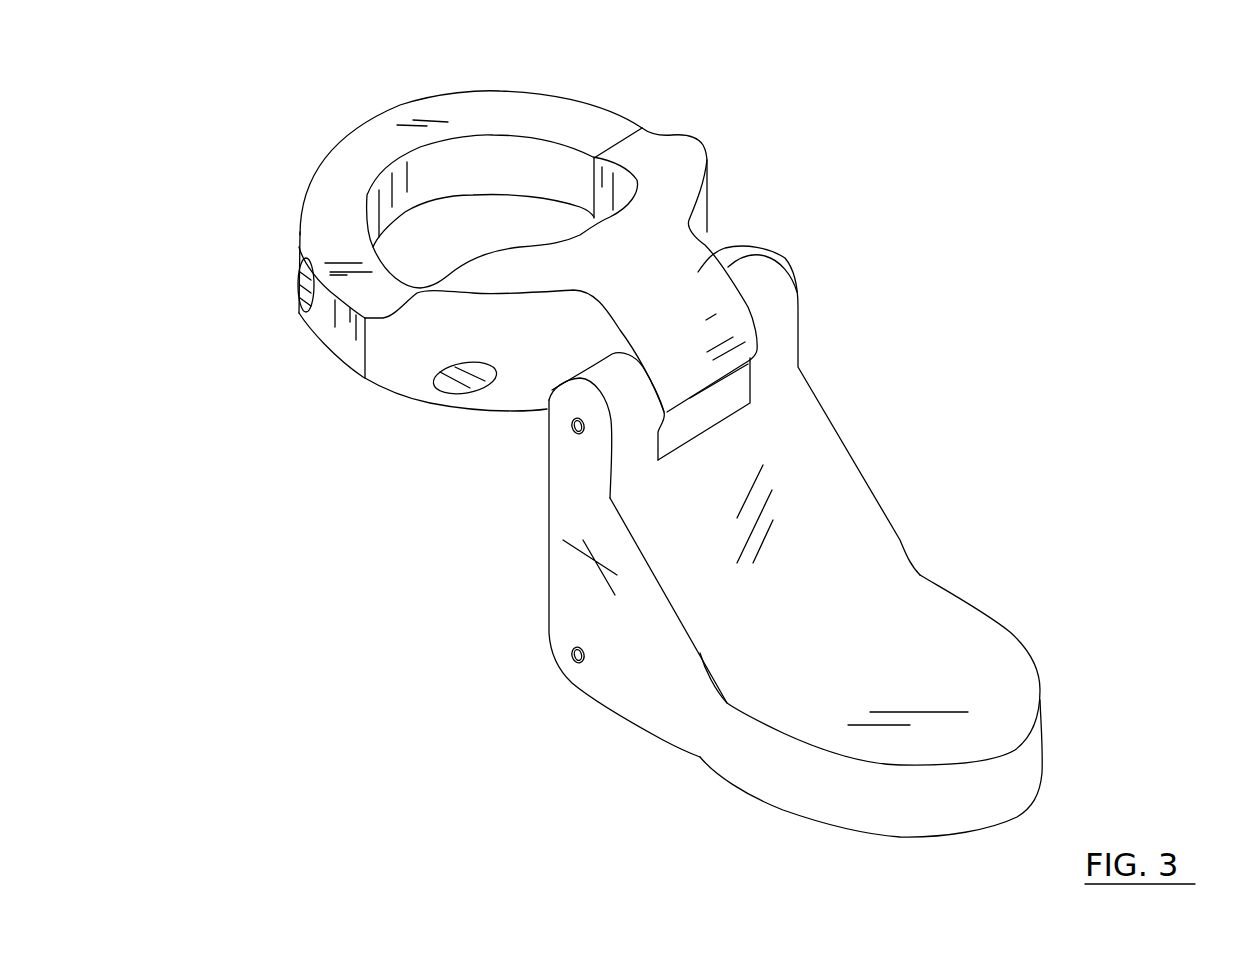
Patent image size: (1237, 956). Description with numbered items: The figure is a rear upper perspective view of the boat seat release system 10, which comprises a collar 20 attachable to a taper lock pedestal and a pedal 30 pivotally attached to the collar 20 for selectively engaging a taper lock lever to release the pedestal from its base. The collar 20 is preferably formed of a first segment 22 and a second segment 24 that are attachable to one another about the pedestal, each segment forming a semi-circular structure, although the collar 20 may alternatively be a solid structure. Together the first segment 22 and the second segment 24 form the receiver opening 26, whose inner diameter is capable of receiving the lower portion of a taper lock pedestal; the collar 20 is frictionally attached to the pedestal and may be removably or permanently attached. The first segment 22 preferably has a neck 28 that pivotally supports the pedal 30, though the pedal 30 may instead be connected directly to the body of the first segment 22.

The boat seat release system 10 is at (1060, 137).
The collar 20 is at (707, 163).
The first segment 22 is at (533, 366).
The second segment 24 is at (330, 198).
The receiver opening 26 is at (497, 156).
The neck 28 is at (748, 246).
The pedal 30 is at (943, 637).